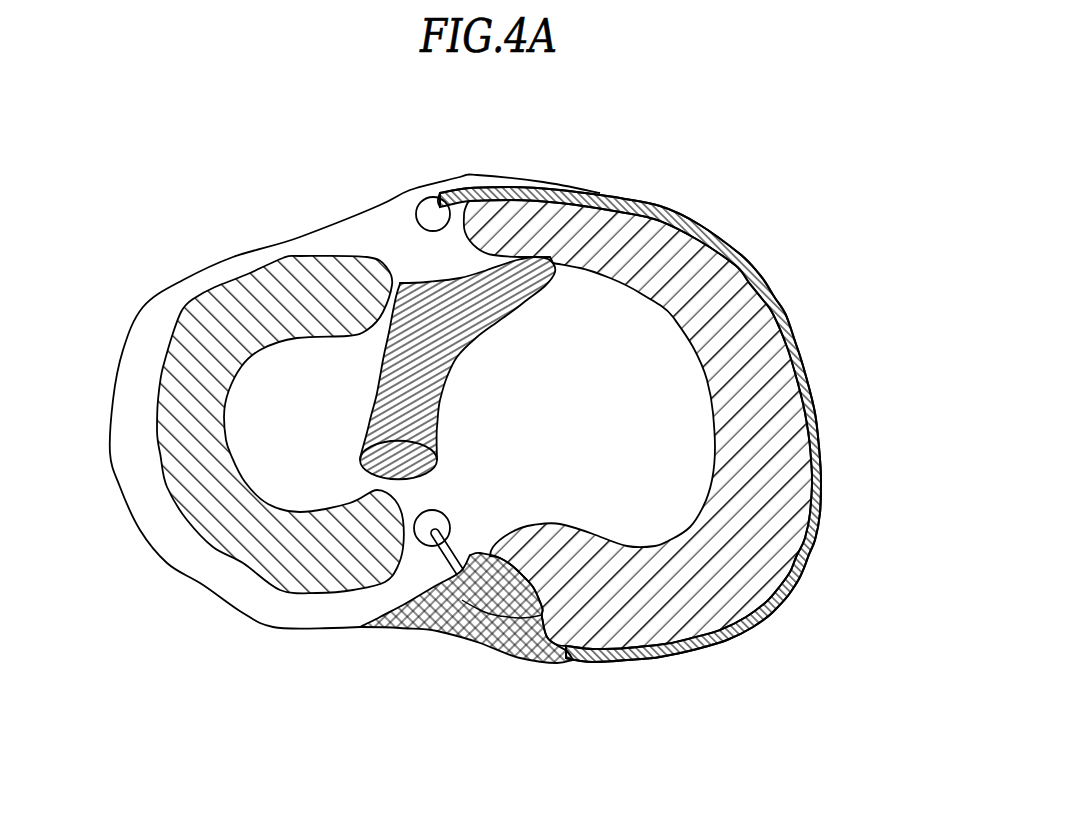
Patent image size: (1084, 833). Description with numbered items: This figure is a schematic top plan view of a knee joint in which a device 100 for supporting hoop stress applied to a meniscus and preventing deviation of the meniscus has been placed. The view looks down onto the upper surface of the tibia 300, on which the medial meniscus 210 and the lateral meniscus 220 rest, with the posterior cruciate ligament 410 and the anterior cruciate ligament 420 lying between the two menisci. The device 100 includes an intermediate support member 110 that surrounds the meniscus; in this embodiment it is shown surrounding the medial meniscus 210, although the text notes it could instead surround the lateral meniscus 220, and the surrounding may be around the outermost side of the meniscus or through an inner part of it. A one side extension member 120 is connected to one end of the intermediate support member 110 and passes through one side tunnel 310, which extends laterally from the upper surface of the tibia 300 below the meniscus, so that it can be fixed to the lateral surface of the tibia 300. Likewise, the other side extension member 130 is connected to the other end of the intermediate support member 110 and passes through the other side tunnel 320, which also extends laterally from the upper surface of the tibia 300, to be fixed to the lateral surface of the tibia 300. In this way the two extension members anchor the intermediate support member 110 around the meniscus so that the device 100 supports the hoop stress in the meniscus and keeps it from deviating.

The device for supporting hoop stress applied to meniscus and preventing deviation o 100 is at (764, 264).
The intermediate support member 110 is at (812, 540).
The one side extension member 120 is at (431, 546).
The the other side extension member 130 is at (437, 193).
The medial meniscus 210 is at (680, 610).
The lateral meniscus 220 is at (267, 290).
The tibia 300 is at (128, 295).
The one side tunnel 310 is at (413, 535).
The the other side tunnel 320 is at (415, 213).
The posterior cruciate ligament 410 is at (477, 612).
The anterior cruciate ligament 420 is at (397, 458).